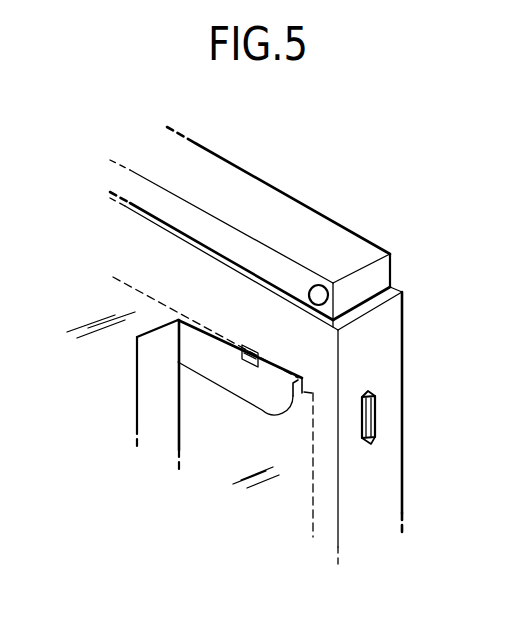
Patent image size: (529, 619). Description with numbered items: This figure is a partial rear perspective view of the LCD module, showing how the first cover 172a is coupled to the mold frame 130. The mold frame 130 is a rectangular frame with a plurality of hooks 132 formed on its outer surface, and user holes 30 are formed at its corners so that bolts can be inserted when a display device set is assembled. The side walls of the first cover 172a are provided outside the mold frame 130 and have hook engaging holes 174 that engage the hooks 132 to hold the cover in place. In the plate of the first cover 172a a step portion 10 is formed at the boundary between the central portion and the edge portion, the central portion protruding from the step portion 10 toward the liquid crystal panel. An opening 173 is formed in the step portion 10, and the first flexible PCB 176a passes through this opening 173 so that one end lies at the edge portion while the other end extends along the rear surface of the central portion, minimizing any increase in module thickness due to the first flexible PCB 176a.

The step portion 10 is at (155, 302).
The mold frame 130 is at (258, 241).
The user hole 30 is at (319, 293).
The opening 173 is at (258, 352).
The hook engaging hole 174 is at (369, 392).
The hook 132 is at (420, 396).
The first cover 172a is at (298, 382).
The first flexible PCB 176a is at (147, 390).